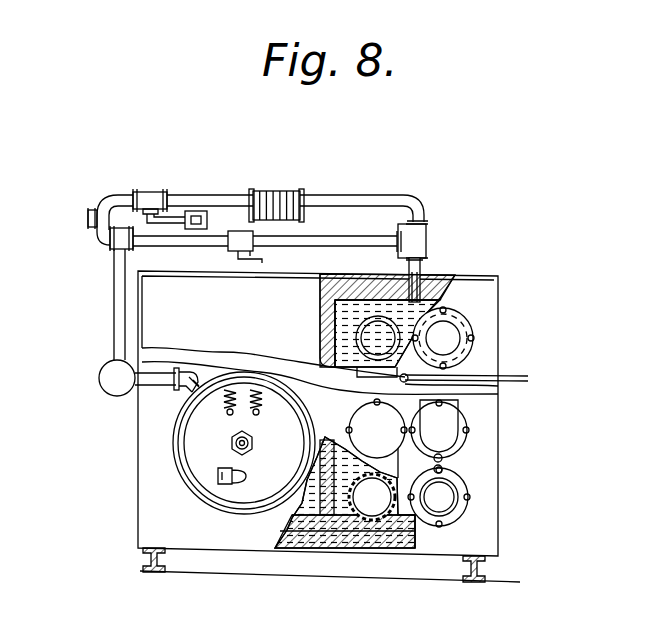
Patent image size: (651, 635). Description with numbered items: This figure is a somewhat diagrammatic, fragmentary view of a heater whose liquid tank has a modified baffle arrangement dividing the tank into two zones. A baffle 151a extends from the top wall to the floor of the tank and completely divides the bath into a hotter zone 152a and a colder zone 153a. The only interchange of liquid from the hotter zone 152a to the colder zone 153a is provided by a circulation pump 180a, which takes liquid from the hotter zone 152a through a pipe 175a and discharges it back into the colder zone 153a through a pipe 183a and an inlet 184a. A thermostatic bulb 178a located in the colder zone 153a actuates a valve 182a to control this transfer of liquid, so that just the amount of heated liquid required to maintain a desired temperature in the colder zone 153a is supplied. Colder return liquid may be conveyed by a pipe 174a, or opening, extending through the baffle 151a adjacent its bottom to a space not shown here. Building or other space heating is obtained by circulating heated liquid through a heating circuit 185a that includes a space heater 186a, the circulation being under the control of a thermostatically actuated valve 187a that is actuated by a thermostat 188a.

The baffle 151a is at (342, 343).
The hotter zone 152a is at (322, 288).
The colder zone 153a is at (345, 320).
The pipe 174a is at (350, 537).
The pipe 175a is at (160, 383).
The thermostatic bulb 178a is at (408, 382).
The circulation pump 180a is at (106, 365).
The valve 182a is at (236, 240).
The pipe 183a is at (118, 286).
The inlet 184a is at (417, 284).
The heating circuit 185a is at (340, 200).
The space heater 186a is at (265, 192).
The thermostatically actuated valve 187a is at (151, 197).
The thermostat 188a is at (222, 183).